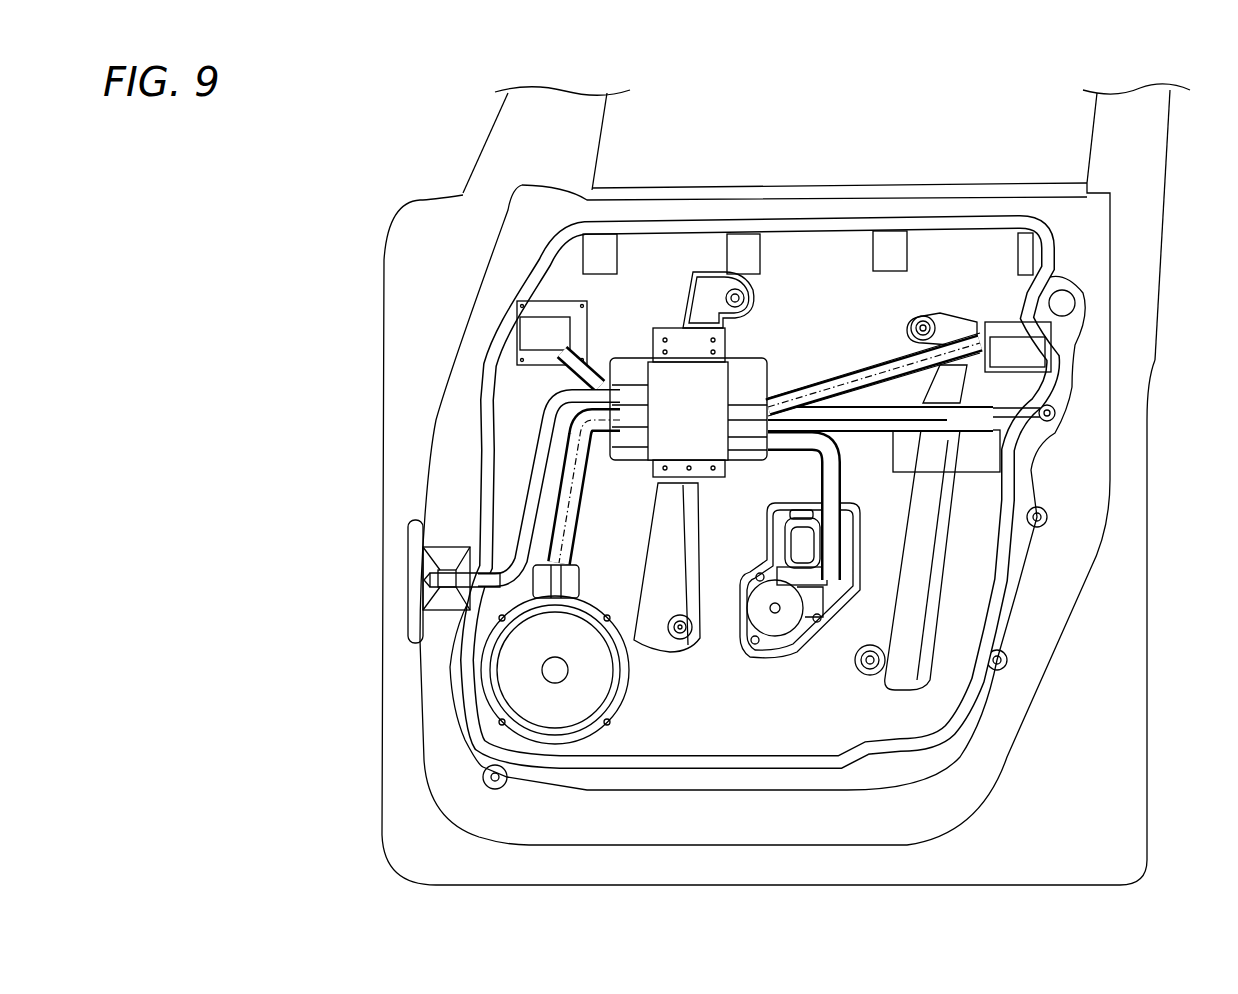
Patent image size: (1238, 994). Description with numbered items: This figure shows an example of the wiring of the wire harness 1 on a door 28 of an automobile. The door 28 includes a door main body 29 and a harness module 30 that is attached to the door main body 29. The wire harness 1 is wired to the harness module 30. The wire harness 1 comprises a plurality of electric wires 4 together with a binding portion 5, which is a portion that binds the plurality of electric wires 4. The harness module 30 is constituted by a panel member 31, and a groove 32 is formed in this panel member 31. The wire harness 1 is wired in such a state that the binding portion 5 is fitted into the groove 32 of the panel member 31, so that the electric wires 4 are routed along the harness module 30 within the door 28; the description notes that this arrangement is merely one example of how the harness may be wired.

The wire harness 1 is at (862, 378).
The electric wires 4 is at (755, 403).
The binding portion 5 is at (838, 378).
The door 28 is at (347, 147).
The door main body 29 is at (397, 240).
The harness module 30 is at (545, 243).
The panel member 31 is at (703, 723).
The groove 32 is at (820, 385).